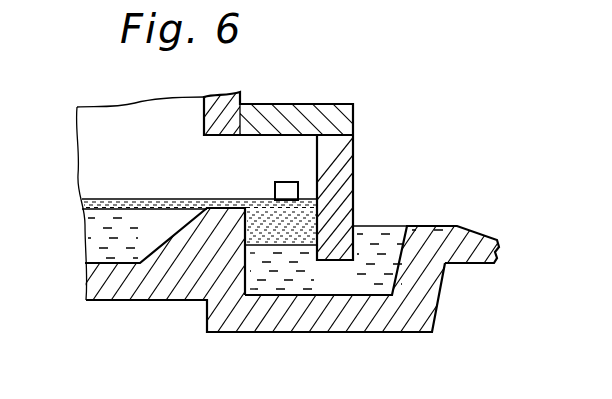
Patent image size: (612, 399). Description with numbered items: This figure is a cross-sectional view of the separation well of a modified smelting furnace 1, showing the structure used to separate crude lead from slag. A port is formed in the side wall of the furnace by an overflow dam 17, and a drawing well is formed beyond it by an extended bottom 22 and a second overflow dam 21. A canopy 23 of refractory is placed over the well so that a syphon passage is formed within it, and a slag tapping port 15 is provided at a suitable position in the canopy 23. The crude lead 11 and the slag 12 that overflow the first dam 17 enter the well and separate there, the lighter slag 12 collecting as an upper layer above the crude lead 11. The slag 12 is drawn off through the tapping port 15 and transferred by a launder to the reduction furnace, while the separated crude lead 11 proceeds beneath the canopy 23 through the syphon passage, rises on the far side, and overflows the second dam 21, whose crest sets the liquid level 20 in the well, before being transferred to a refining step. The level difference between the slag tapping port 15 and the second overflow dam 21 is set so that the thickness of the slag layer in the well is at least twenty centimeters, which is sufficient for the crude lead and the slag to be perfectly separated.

The vessel body 1 is at (72, 183).
The crude lead 11 is at (90, 248).
The slag 12 is at (157, 199).
The slag tapping port 15 is at (284, 181).
The overflow dam 17 is at (212, 199).
The liquid surface 20 is at (395, 225).
The second overflow dam 21 is at (427, 238).
The extended bottom 22 is at (386, 315).
The canopy 23 is at (310, 104).